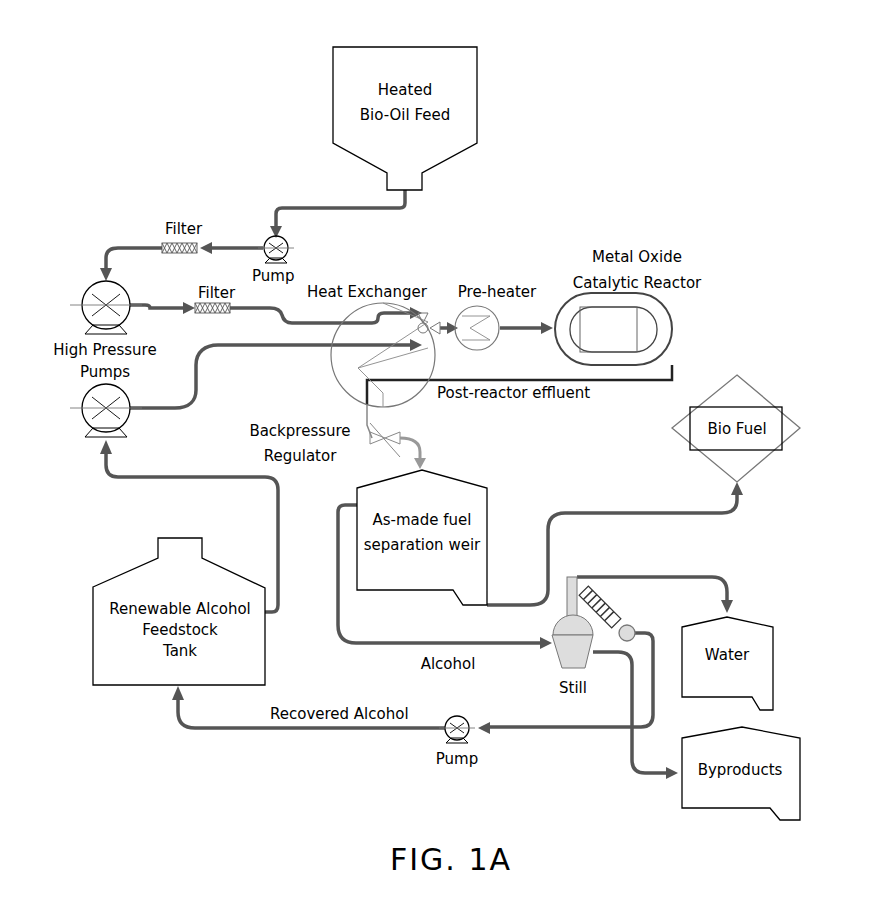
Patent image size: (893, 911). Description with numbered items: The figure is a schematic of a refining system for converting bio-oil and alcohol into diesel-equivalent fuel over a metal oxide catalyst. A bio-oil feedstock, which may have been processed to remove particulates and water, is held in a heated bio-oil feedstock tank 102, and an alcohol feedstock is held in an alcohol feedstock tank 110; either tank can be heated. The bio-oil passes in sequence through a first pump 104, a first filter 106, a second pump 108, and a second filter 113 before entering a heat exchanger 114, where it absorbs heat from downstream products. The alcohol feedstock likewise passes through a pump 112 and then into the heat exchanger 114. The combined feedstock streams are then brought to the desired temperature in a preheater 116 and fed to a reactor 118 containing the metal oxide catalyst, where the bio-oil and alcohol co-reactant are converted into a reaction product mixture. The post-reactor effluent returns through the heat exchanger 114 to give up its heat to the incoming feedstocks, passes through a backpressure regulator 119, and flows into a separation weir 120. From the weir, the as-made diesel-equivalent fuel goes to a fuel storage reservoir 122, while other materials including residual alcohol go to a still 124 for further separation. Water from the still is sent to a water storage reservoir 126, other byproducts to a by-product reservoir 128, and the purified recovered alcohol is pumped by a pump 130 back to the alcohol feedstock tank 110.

The bio-oil feedstock tank 102 is at (443, 62).
The first pump 104 is at (287, 252).
The first filter 106 is at (167, 243).
The second pump 108 is at (100, 286).
The alcohol feedstock tank 110 is at (135, 583).
The pump 112 is at (92, 398).
The second filter 113 is at (198, 313).
The heat exchanger 114 is at (411, 392).
The preheater 116 is at (495, 340).
The reactor 118 is at (667, 318).
The backpressure regulator 119 is at (378, 440).
The separation weir 120 is at (476, 488).
The fuel storage reservoir 122 is at (752, 458).
The still 124 is at (560, 656).
The water storage reservoir 126 is at (742, 627).
The by-product reservoir 128 is at (703, 800).
The pump 130 is at (470, 737).